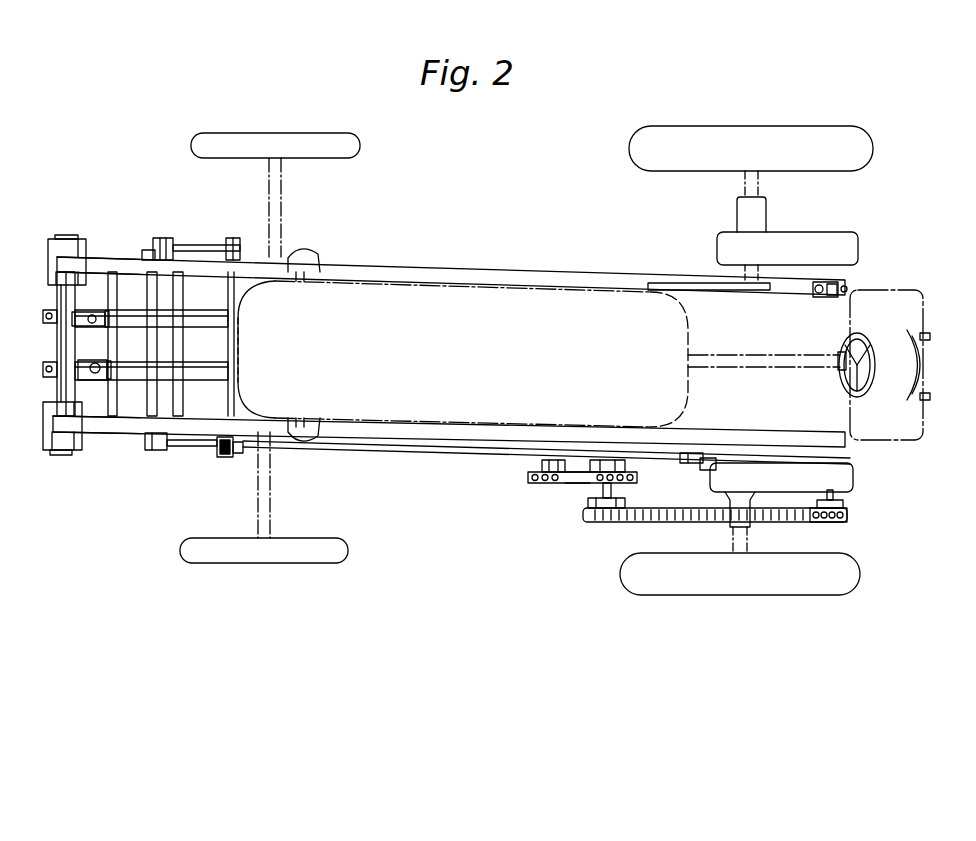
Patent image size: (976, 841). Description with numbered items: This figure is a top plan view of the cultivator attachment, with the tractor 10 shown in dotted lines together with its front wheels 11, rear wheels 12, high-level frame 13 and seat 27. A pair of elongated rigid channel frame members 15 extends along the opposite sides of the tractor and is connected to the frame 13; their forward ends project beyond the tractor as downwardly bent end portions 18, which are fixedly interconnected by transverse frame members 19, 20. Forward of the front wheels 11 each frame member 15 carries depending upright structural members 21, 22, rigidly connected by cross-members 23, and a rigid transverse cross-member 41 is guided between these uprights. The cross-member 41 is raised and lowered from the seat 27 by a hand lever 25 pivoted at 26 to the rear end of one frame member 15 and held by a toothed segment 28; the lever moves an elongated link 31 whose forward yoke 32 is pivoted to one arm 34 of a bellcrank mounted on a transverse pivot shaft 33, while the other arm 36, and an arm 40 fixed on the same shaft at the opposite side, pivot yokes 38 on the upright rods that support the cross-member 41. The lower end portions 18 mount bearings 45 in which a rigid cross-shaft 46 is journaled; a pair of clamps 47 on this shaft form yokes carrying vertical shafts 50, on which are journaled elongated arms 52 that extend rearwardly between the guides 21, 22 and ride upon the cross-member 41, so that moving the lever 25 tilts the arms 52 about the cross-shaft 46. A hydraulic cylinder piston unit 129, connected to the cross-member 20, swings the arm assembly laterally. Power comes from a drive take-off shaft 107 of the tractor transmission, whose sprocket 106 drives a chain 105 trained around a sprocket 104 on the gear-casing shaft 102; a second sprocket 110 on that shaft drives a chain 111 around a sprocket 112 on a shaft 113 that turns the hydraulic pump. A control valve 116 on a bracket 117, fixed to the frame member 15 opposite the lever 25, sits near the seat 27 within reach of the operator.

The tractor 10 is at (893, 286).
The front wheels 11 is at (316, 142).
The rear wheels 12 is at (738, 137).
The frame 13 is at (690, 300).
The frame members 15 is at (392, 273).
The end portions 18 is at (88, 264).
The transverse frame member 19 is at (113, 282).
The transverse frame member 20 is at (60, 345).
The upright structural member 21 is at (147, 250).
The upright structural member 22 is at (180, 246).
The cross-members 23 is at (160, 406).
The hand lever 25 is at (850, 480).
The pivot 26 is at (706, 470).
The seat 27 is at (900, 441).
The toothed segment 28 is at (680, 465).
The link 31 is at (460, 455).
The yoke 32 is at (238, 455).
The pivot shaft 33 is at (240, 298).
The arm 34 is at (218, 458).
The arm 36 is at (188, 447).
The yoke 38 is at (153, 451).
The arm 40 is at (205, 248).
The cross-member 41 is at (160, 292).
The bearings 45 is at (48, 262).
The cross-shaft 46 is at (57, 392).
The clamps 47 is at (43, 316).
The vertical shaft 50 is at (95, 376).
The arm 52 is at (235, 378).
The shaft 102 is at (600, 492).
The sprocket 104 is at (586, 512).
The drive chain 105 is at (640, 522).
The sprocket 106 is at (848, 520).
The drive take-off shaft 107 is at (846, 503).
The second sprocket 110 is at (630, 470).
The chain 111 is at (560, 488).
The sprocket 112 is at (530, 476).
The shaft 113 is at (560, 458).
The control valve 116 is at (838, 284).
The bracket 117 is at (790, 286).
The hydraulic cylinder piston unit 129 is at (103, 318).